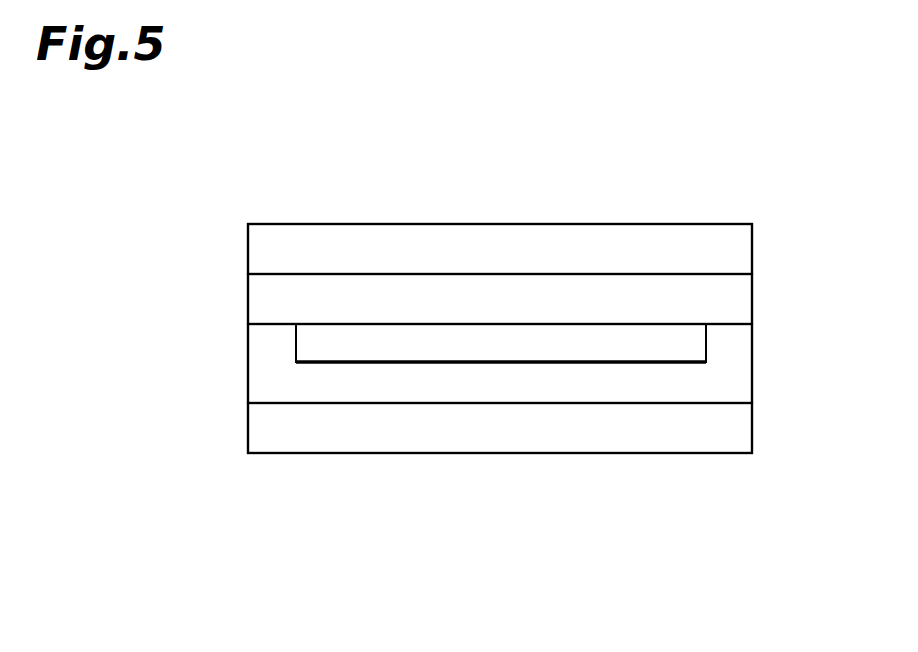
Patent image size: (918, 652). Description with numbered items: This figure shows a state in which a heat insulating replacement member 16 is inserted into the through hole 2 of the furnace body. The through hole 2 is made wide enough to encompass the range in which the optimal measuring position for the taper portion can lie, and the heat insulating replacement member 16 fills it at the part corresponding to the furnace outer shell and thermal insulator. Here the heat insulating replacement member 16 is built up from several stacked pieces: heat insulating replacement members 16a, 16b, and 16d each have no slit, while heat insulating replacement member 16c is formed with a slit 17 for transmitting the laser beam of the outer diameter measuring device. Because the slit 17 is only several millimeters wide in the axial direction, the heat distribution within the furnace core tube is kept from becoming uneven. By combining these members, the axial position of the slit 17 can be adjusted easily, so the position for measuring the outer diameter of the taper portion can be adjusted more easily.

The through hole 2 is at (753, 242).
The heat insulating replacement member 16 is at (407, 338).
The heat insulating replacement member 16a is at (248, 252).
The heat insulating replacement member 16b is at (248, 300).
The heat insulating replacement member 16c is at (248, 364).
The heat insulating replacement member 16d is at (441, 428).
The slit 17 is at (707, 340).